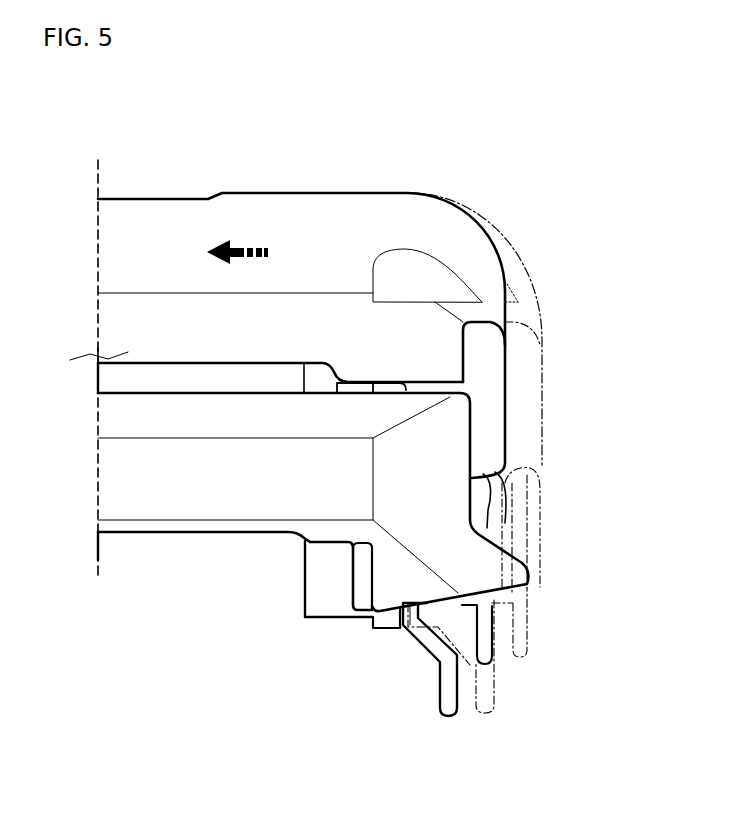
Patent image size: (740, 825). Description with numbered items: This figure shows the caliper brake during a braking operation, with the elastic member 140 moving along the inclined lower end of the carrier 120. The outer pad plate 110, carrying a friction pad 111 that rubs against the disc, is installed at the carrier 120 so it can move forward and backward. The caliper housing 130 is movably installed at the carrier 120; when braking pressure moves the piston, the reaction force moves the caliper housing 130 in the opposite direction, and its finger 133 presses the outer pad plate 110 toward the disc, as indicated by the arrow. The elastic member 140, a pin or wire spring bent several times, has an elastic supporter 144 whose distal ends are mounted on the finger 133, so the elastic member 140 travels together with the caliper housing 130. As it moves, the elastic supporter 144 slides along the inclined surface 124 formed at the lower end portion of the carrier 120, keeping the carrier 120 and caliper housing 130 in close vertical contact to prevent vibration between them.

The pad plate 110 is at (383, 618).
The friction pad 111 is at (326, 611).
The carrier 120 is at (138, 515).
The inclined surface 124 is at (390, 626).
The caliper housing 130 is at (303, 214).
The finger 133 is at (497, 385).
The elastic member 140 is at (508, 510).
The elastic supporter 144 is at (452, 612).